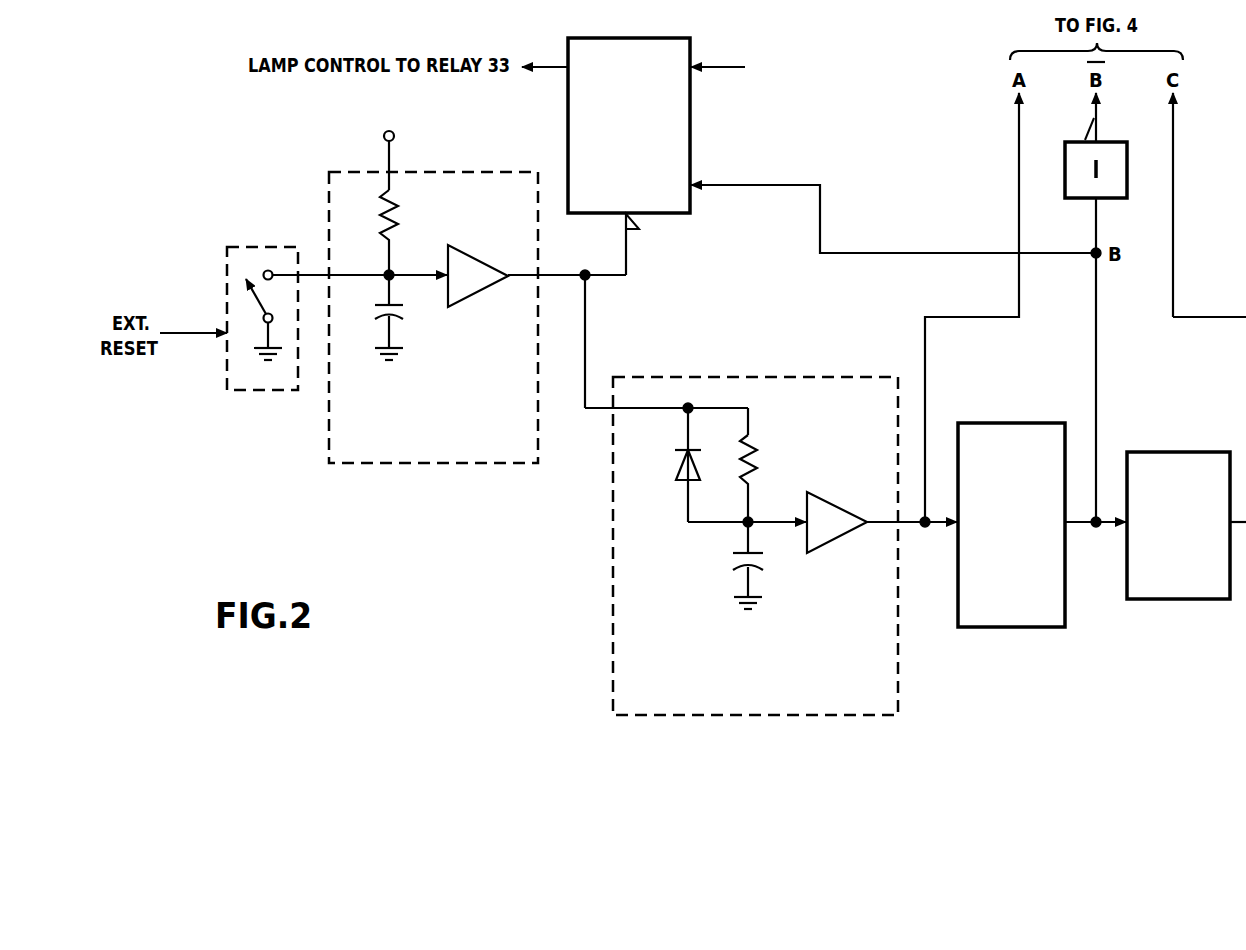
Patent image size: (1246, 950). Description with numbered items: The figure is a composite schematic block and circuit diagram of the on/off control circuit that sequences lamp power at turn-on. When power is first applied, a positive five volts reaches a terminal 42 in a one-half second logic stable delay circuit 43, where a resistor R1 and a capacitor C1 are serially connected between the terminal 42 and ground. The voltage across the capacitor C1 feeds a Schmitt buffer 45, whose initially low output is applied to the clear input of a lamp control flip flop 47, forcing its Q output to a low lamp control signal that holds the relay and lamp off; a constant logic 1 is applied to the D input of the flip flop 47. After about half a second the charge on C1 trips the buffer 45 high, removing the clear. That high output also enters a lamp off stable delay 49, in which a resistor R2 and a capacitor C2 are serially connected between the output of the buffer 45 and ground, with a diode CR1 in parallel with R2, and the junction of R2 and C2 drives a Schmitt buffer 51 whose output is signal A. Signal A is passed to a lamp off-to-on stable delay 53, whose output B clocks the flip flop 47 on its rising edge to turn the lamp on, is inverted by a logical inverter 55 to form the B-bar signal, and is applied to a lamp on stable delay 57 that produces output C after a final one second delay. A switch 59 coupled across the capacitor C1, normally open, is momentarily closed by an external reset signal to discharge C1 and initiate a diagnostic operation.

The logic high input to D of flip flop 1 is at (725, 68).
The terminal 42 is at (394, 137).
The logic stable delay circuit 43 is at (329, 202).
The Schmitt buffer 45 is at (470, 252).
The lamp control flip flop 47 is at (690, 137).
The lamp off stable delay 49 is at (612, 628).
The Schmitt buffer 51 is at (826, 503).
The lamp off-to-on stable delay 53 is at (1043, 423).
The logical inverter 55 is at (1082, 189).
The lamp on stable delay 57 is at (1175, 452).
The switch 59 is at (278, 247).
The resistor R1 is at (399, 214).
The capacitor C1 is at (400, 315).
The resistor R2 is at (760, 444).
The capacitor C2 is at (735, 553).
The diode CR1 is at (684, 481).